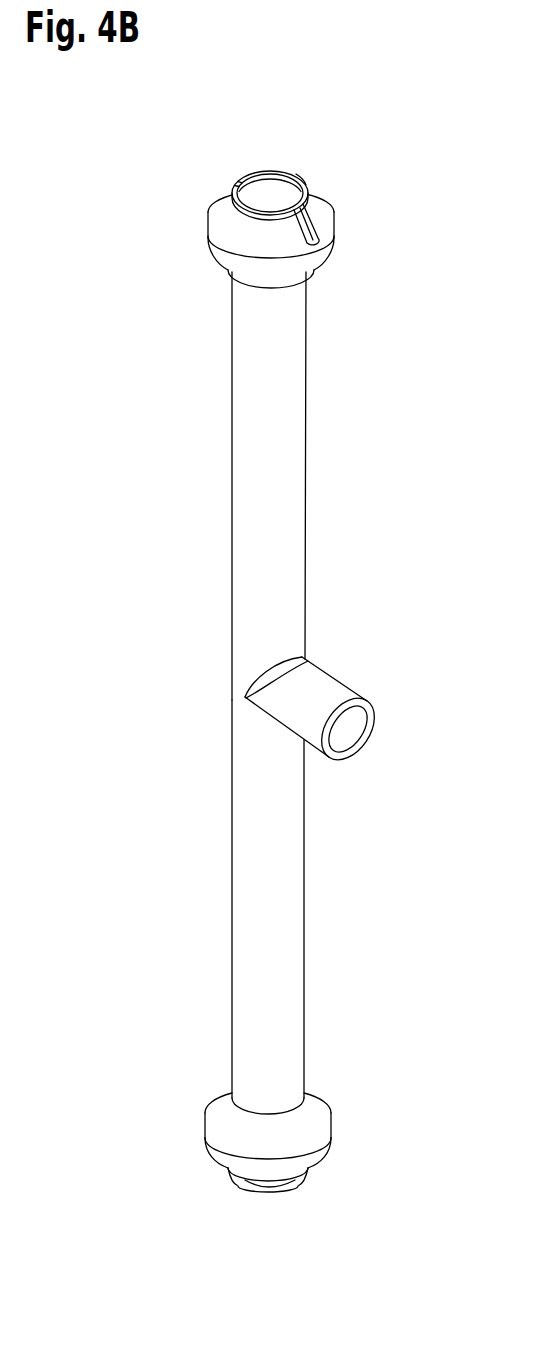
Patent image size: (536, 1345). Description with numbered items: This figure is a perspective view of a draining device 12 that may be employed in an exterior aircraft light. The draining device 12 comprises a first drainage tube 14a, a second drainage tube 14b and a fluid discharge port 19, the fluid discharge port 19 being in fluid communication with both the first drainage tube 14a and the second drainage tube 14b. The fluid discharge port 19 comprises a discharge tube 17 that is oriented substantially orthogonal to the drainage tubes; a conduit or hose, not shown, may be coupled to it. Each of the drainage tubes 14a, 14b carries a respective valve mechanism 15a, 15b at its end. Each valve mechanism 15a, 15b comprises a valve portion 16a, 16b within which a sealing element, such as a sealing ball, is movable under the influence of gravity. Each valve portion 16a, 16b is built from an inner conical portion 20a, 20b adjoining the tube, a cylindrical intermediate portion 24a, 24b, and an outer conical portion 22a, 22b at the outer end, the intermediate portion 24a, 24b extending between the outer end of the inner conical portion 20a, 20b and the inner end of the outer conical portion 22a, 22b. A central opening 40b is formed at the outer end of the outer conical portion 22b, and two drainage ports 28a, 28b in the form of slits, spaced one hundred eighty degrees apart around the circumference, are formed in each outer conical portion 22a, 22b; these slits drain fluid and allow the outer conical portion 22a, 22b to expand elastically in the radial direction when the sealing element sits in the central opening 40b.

The draining device 12 is at (327, 123).
The first drainage tube 14a is at (277, 927).
The second drainage tube 14b is at (280, 443).
The valve mechanism 15a is at (182, 1159).
The valve mechanism 15b is at (185, 212).
The valve portion 16a is at (336, 1109).
The valve portion 16b is at (338, 262).
The discharge tube 17 is at (325, 695).
The fluid discharge port 19 is at (329, 665).
The inner conical portion 20a is at (227, 1112).
The inner conical portion 20b is at (258, 281).
The outer conical portion 22a is at (243, 1181).
The outer conical portion 22b is at (222, 213).
The intermediate portion 24a is at (308, 1157).
The intermediate portion 24b is at (313, 257).
The drainage port 28a is at (300, 1177).
The drainage port 28b is at (247, 179).
The central opening 40b is at (294, 180).